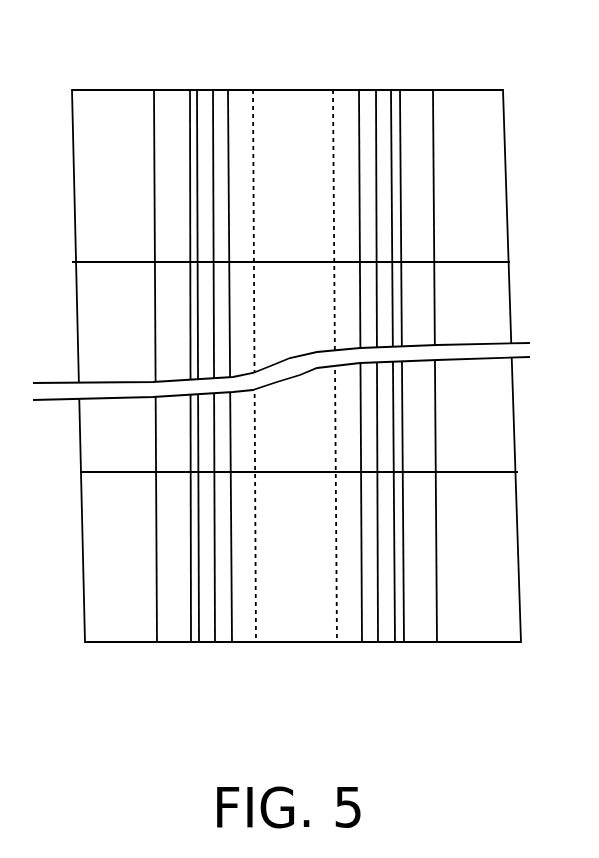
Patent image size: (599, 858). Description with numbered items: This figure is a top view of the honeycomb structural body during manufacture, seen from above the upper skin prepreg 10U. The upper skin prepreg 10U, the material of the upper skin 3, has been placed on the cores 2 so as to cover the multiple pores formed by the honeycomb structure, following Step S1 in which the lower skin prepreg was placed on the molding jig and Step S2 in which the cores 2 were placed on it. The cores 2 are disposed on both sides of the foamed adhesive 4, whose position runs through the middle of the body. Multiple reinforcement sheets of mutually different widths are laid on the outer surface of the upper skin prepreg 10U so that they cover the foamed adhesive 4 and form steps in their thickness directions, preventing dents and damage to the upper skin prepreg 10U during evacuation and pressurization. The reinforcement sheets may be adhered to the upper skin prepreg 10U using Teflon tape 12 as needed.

The upper skin 3 is at (110, 98).
The Step S1 is at (192, 96).
The Step S2 is at (385, 98).
The Teflon tape 12 is at (418, 98).
The upper skin prepreg 10U is at (475, 98).
The foamed adhesive 4 is at (288, 625).
The core 2 is at (352, 625).